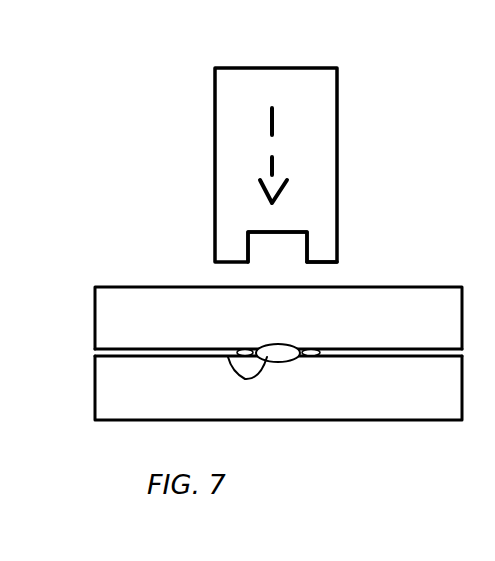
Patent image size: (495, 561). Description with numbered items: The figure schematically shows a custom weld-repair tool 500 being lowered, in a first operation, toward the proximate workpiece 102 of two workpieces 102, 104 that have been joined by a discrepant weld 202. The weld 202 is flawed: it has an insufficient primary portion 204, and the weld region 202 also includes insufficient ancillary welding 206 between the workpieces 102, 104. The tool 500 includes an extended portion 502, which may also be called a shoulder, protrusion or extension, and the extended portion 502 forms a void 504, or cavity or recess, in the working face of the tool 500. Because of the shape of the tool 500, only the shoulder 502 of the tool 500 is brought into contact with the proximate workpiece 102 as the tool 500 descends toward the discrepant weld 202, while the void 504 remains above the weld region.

The custom weld-repair tool 500 is at (185, 100).
The extended portion 502 is at (312, 264).
The void 504 is at (277, 233).
The workpiece 102 is at (445, 337).
The workpiece 104 is at (445, 405).
The discrepant weld 202 is at (282, 407).
The primary portion 204 is at (228, 357).
The ancillary welding 206 is at (252, 352).